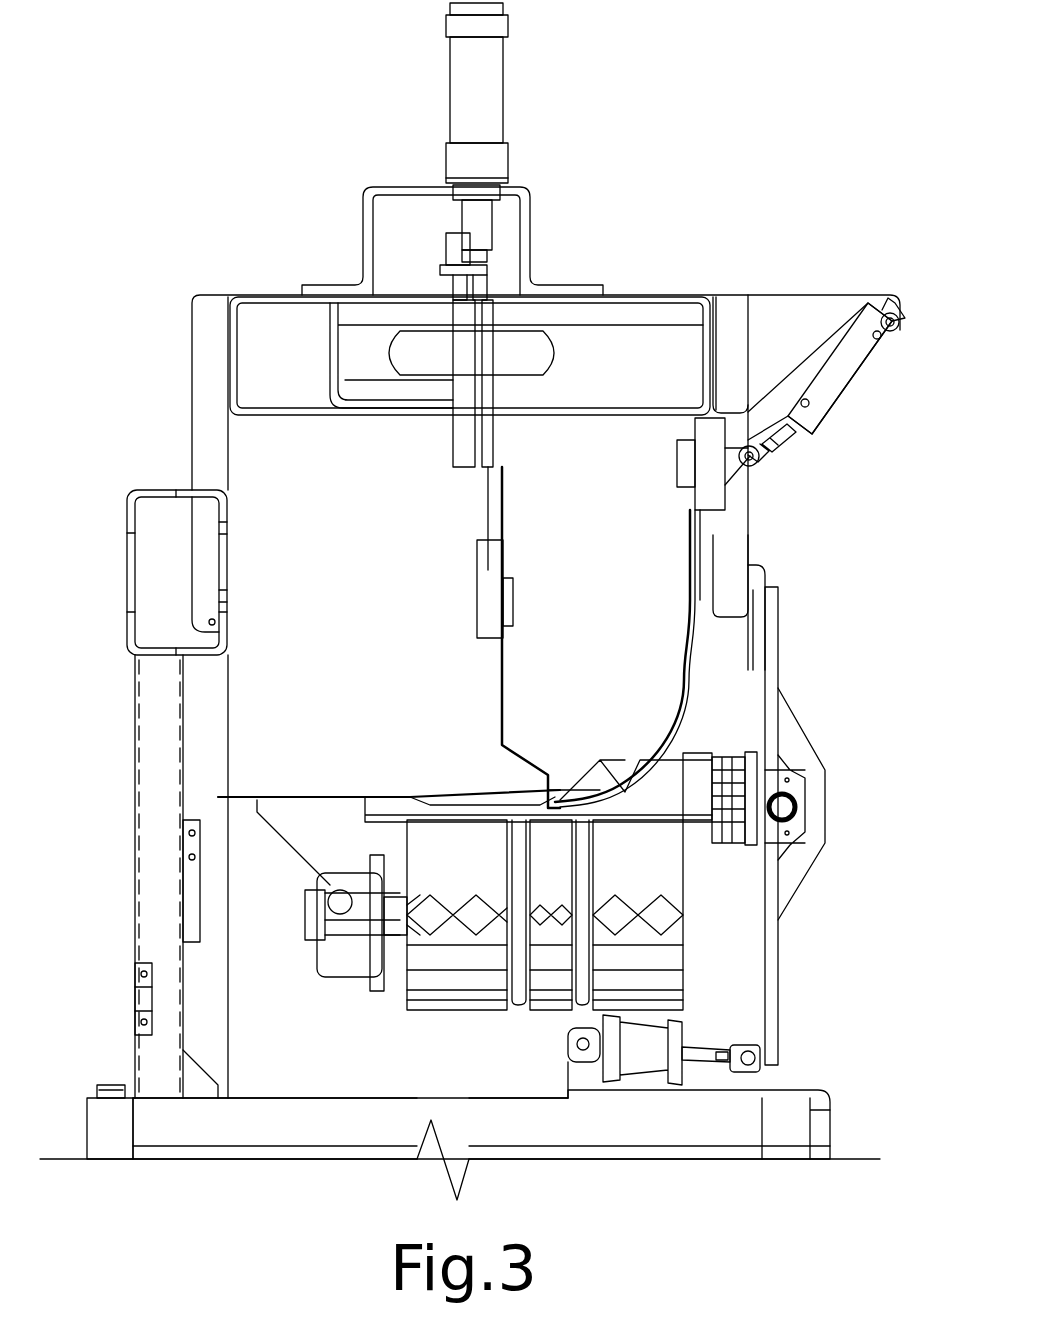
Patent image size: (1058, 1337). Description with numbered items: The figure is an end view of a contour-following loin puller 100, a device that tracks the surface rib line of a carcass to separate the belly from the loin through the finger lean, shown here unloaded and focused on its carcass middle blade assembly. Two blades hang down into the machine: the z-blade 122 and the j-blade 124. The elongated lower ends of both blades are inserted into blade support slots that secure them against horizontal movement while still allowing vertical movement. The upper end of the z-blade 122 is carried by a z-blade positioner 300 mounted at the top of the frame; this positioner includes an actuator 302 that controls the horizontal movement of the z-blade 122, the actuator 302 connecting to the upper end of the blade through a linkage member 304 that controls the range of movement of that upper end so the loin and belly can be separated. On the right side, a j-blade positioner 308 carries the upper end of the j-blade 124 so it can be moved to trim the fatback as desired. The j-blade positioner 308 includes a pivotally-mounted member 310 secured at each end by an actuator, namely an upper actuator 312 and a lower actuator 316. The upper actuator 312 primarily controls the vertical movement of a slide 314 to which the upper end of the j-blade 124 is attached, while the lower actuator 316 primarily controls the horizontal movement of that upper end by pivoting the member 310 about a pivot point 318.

The contour-following loin puller 100 is at (283, 250).
The z-blade 122 is at (502, 700).
The j-blade 124 is at (682, 712).
The z-blade positioner 300 is at (415, 140).
The actuator 302 is at (485, 88).
The linkage member 304 is at (458, 445).
The j-blade positioner 308 is at (778, 392).
The pivotally-mounted member 310 is at (773, 640).
The upper actuator 312 is at (843, 378).
The slide 314 is at (712, 494).
The lower actuator 316 is at (640, 1048).
The pivot point 318 is at (790, 806).